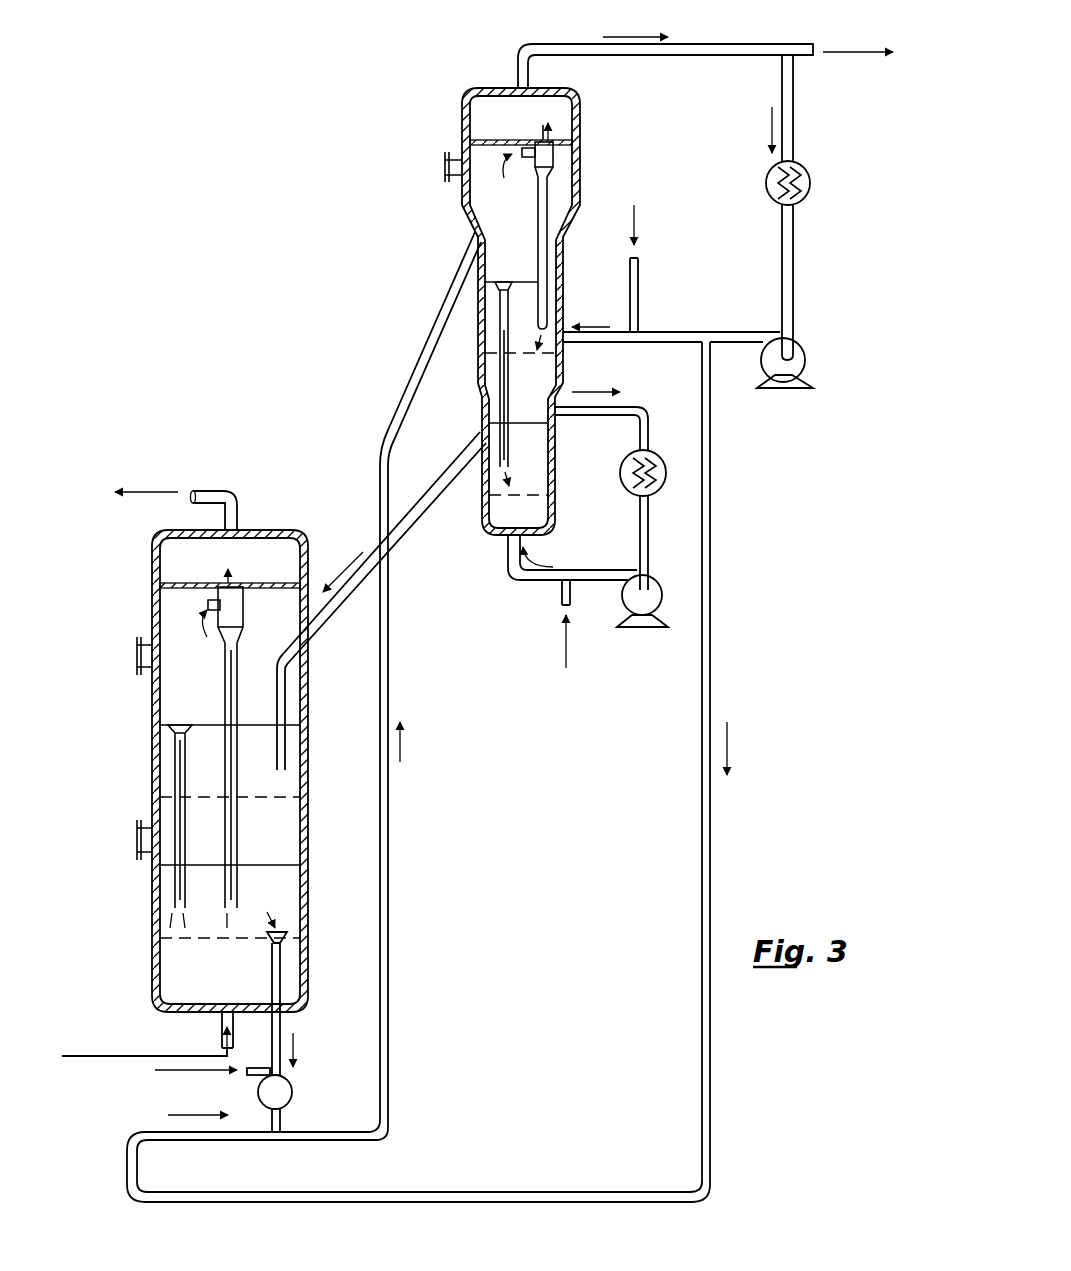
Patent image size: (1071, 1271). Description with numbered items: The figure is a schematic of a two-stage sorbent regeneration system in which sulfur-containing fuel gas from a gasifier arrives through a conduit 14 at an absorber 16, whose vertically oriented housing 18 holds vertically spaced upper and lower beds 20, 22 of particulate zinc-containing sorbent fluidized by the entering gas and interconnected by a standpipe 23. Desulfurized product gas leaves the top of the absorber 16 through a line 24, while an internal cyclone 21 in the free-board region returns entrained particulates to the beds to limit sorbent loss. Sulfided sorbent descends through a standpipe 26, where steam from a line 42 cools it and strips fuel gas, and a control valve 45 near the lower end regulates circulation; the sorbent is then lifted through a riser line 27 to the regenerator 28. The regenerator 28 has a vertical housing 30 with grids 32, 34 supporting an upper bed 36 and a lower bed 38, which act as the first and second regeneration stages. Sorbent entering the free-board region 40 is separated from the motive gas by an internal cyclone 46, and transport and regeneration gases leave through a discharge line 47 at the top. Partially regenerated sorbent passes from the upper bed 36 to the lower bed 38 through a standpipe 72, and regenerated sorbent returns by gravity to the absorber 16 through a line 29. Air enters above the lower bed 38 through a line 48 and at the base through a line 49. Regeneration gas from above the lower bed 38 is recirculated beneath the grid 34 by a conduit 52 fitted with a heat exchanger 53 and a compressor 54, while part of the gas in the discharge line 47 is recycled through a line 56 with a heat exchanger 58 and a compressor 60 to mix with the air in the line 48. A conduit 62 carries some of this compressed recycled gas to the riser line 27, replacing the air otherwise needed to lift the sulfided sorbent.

The conduit 14 is at (107, 1058).
The absorber 16 is at (150, 696).
The housing 18 is at (308, 658).
The bed 20 is at (282, 777).
The internal cyclone 21 is at (243, 614).
The bed 22 is at (278, 890).
The standpipe 23 is at (175, 767).
The line 24 is at (237, 508).
The standpipe 26 is at (280, 1027).
The line 27 is at (389, 591).
The regenerator 28 is at (462, 122).
The line 29 is at (403, 533).
The housing 30 is at (460, 200).
The grid 32 is at (537, 353).
The grid 34 is at (523, 495).
The upper bed 36 is at (490, 304).
The lower bed 38 is at (532, 442).
The free-board region 40 is at (563, 174).
The line 42 is at (255, 1063).
The control valve 45 is at (292, 1092).
The internal cyclone 46 is at (550, 153).
The discharge line 47 is at (562, 43).
The line 48 is at (638, 270).
The line 49 is at (560, 592).
The conduit 52 is at (638, 405).
The heat exchanger 53 is at (658, 458).
The compressor 54 is at (653, 597).
The line 56 is at (793, 233).
The heat exchanger 58 is at (812, 175).
The compressor 60 is at (768, 358).
The conduit 62 is at (700, 1085).
The standpipe 72 is at (498, 383).